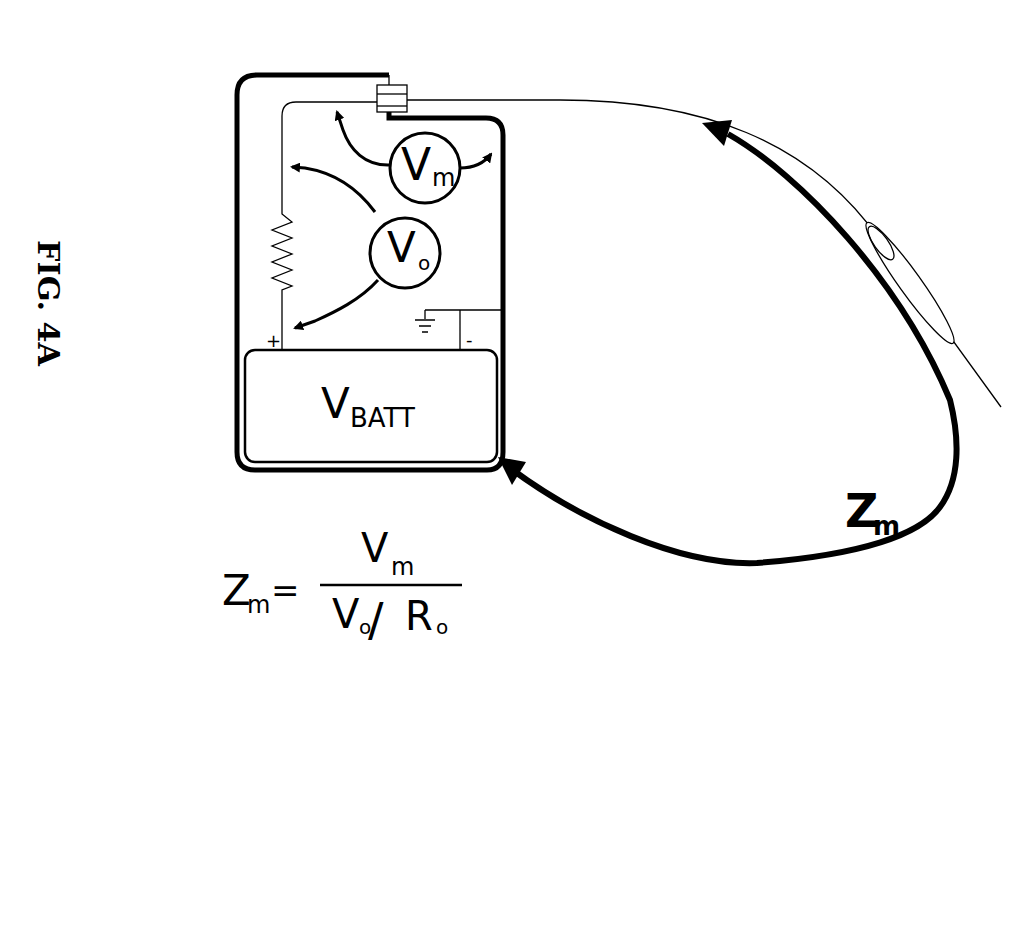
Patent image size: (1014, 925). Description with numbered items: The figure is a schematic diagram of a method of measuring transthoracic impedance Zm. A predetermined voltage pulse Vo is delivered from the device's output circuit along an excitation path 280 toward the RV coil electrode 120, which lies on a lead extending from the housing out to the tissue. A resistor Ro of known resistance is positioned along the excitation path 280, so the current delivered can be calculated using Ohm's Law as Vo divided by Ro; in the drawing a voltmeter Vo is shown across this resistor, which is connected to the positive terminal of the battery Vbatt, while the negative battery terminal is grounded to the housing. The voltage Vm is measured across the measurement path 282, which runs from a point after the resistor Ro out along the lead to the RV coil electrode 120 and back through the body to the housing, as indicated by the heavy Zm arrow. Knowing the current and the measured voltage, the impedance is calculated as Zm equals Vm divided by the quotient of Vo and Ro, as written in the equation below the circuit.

The excitation path 280 is at (282, 311).
The measurement path 282 is at (592, 99).
The RV coil electrode 120 is at (932, 300).